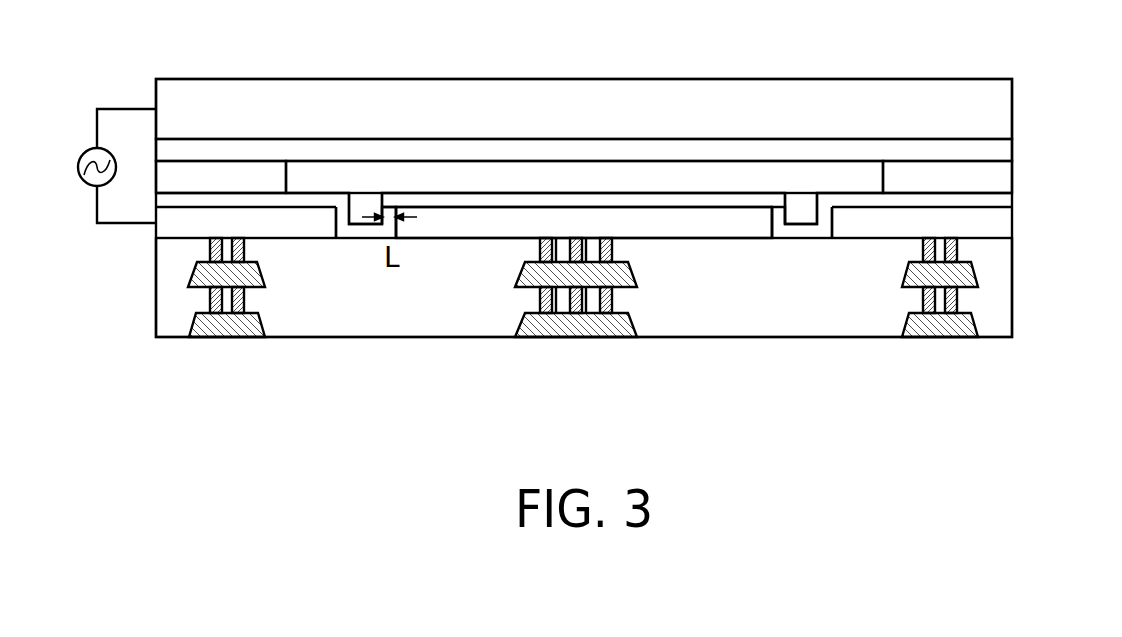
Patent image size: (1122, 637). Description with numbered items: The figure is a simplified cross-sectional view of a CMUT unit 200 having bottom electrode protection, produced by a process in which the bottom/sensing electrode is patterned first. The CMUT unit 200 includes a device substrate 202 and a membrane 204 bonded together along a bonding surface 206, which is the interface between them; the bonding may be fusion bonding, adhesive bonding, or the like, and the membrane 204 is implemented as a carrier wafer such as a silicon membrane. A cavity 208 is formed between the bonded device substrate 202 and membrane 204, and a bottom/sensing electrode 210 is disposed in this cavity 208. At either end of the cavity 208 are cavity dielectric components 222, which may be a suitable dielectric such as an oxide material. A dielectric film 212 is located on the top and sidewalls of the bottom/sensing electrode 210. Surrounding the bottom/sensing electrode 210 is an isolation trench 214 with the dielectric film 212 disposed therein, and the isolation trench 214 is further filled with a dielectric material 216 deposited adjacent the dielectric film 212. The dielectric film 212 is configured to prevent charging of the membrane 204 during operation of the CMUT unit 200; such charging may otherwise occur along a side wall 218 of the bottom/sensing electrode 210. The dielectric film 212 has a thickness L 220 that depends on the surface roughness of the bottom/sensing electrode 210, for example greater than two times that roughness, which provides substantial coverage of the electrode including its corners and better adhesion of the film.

The CMUT unit 200 is at (1018, 419).
The device substrate 202 is at (1002, 288).
The membrane 204 is at (1002, 111).
The bonding surface 206 is at (1002, 149).
The cavity 208 is at (594, 180).
The bottom/sensing electrode 210 is at (690, 233).
The dielectric film 212 is at (190, 201).
The isolation trench 214 is at (347, 240).
The dielectric material 216 is at (358, 208).
The side wall 218 is at (393, 211).
The thickness L 220 is at (390, 275).
The cavity dielectric components 222 is at (1002, 177).